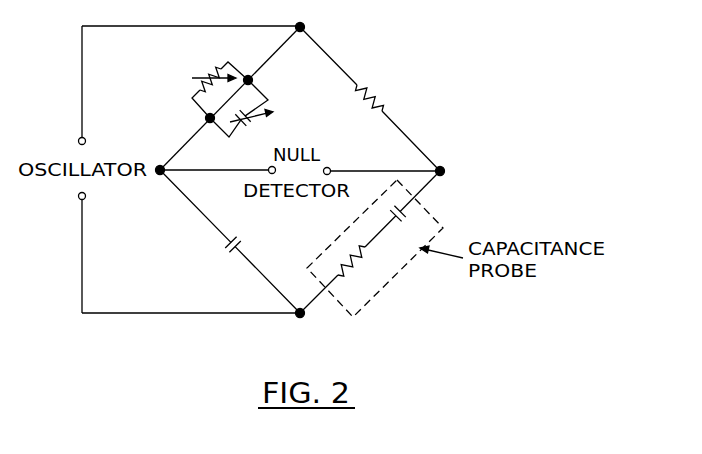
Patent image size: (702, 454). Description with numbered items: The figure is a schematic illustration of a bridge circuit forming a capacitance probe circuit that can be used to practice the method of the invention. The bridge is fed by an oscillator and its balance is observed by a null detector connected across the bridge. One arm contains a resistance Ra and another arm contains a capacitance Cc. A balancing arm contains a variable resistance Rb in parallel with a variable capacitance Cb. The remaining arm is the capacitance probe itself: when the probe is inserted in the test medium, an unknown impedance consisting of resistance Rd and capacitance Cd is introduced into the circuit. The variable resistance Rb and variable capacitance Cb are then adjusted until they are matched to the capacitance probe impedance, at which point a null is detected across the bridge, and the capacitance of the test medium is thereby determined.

The resistance Ra is at (370, 99).
The variable resistance Rb is at (213, 87).
The variable capacitance Cb is at (241, 115).
The capacitance Cc is at (230, 241).
The capacitance Cd is at (415, 208).
The resistance Rd is at (348, 264).